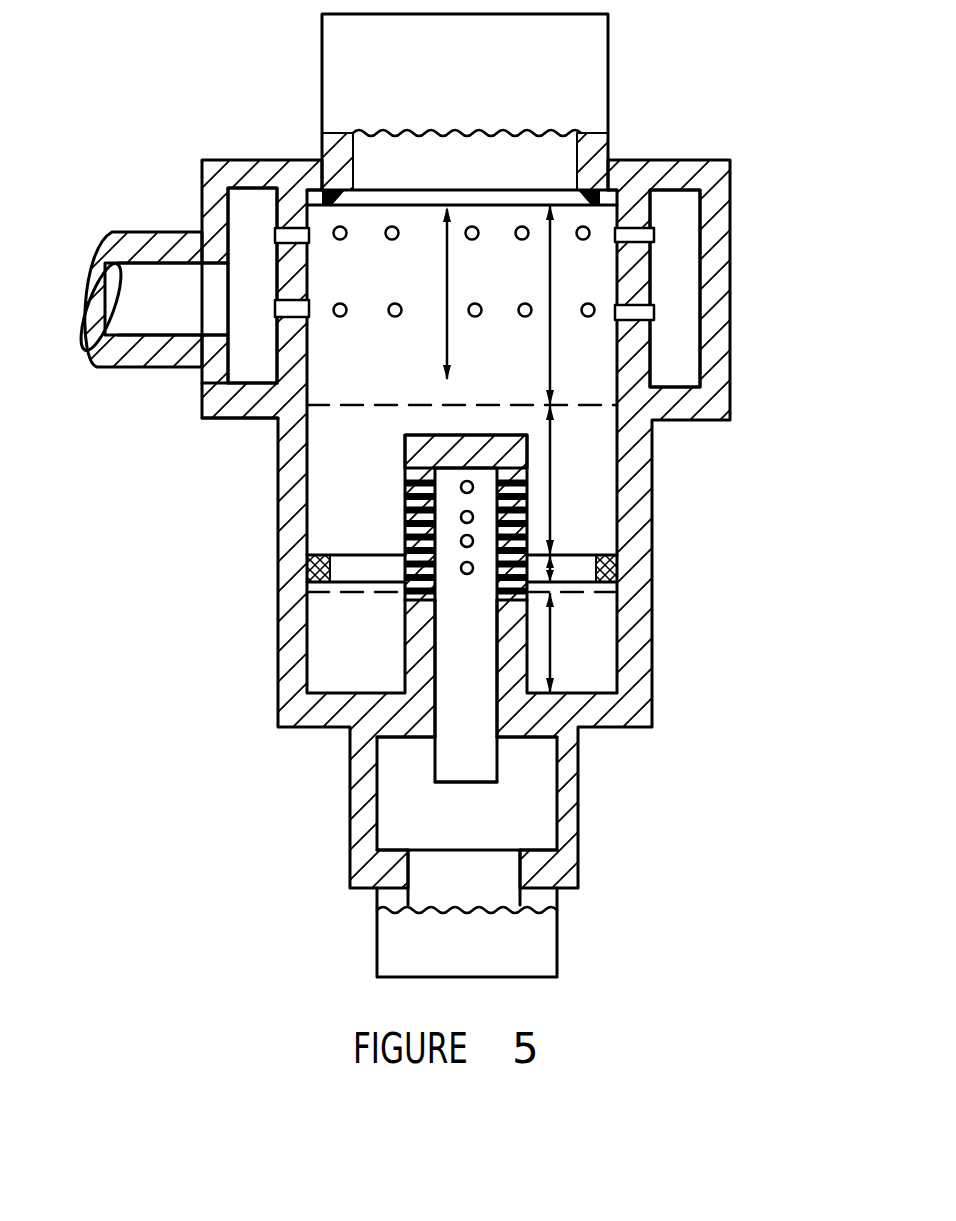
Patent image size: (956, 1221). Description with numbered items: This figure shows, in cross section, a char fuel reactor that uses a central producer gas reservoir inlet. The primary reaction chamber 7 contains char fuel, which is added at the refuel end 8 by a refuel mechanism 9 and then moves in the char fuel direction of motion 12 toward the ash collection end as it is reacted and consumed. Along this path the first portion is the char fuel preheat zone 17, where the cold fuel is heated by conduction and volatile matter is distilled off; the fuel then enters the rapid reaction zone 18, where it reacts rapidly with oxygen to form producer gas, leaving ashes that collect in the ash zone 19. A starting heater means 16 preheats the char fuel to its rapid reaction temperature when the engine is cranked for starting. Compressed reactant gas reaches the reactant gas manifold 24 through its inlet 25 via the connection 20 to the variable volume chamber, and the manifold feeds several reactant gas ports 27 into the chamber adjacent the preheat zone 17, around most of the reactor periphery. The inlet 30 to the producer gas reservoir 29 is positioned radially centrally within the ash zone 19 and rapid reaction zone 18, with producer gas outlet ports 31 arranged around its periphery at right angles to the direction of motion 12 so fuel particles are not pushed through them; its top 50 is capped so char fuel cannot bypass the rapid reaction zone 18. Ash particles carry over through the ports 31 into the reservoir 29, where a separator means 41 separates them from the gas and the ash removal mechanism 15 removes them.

The primary reaction chamber 7 is at (372, 315).
The refuel end 8 is at (493, 228).
The refuel mechanism 9 is at (572, 57).
The char fuel direction of motion 12 is at (443, 277).
The ash removal mechanism 15 is at (527, 947).
The starting heater means 16 is at (620, 190).
The char fuel preheat zone 17 is at (552, 352).
The rapid reaction zone 18 is at (555, 495).
The ash zone 19 is at (555, 648).
The connection 20 is at (133, 290).
The reactant gas manifold 24 is at (680, 227).
The inlet 25 is at (258, 338).
The reactant gas ports 27 is at (640, 235).
The producer gas reservoir 29 is at (523, 802).
The inlet 30 is at (450, 545).
The producer gas outlet ports 31 is at (457, 517).
The separator means 41 is at (453, 753).
The top 50 is at (487, 430).